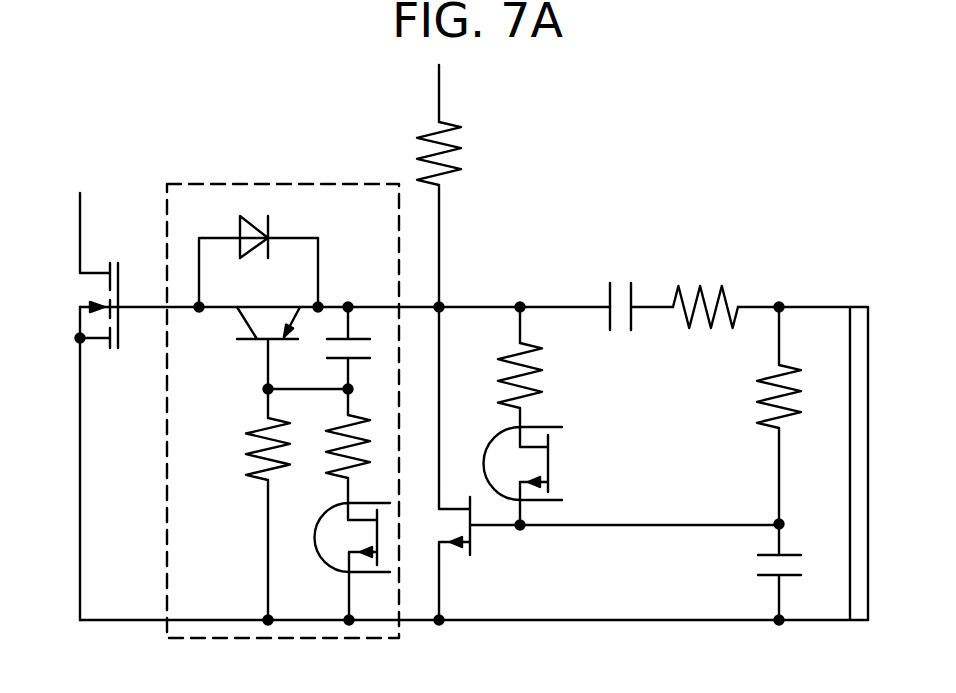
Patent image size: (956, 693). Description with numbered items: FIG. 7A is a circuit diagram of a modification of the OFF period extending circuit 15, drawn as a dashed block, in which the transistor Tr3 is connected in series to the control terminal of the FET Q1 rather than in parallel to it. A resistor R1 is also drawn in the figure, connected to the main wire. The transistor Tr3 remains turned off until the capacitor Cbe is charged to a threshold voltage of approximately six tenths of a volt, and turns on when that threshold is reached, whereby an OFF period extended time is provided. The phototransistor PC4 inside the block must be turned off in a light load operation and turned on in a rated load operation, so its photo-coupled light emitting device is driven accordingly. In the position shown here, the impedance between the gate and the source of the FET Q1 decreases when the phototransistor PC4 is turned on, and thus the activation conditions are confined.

The OFF period extending circuit 15 is at (272, 183).
The FET Q1 is at (82, 406).
The resistor R1 is at (456, 188).
The transistor Tr3 is at (284, 350).
The capacitor Cbe is at (372, 346).
The phototransistor PC4 is at (331, 507).